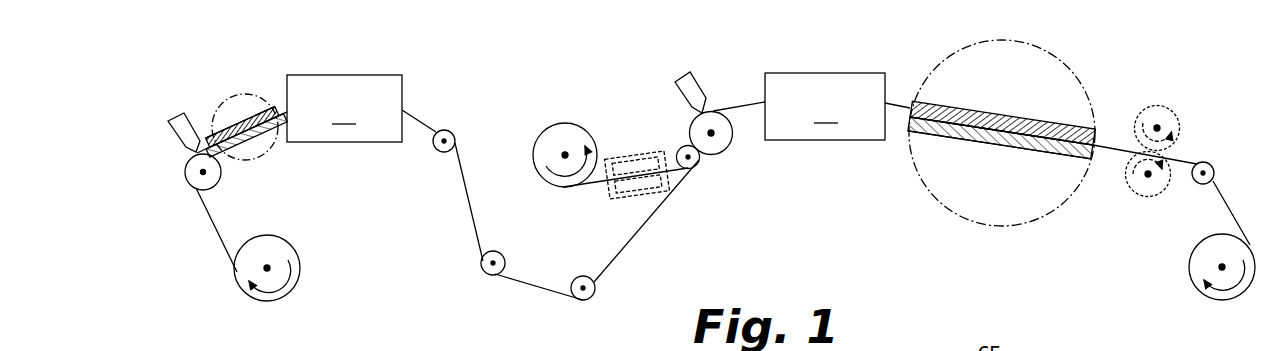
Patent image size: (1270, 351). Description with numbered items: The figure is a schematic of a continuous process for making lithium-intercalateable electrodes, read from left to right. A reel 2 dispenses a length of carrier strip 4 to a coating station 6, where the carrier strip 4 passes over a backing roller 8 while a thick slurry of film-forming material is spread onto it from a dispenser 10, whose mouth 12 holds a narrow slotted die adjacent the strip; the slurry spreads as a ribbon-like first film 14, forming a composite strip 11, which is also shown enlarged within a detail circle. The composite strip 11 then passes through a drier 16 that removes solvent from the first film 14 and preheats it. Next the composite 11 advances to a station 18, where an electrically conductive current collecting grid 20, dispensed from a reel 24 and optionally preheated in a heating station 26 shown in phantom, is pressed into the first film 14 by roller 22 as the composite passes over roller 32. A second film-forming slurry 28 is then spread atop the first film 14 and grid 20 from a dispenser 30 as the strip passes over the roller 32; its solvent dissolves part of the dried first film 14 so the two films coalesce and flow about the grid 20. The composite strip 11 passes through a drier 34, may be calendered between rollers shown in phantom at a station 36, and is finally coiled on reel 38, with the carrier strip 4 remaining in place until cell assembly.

The reel 2 is at (287, 238).
The carrier strip 4 is at (212, 233).
The coating station 6 is at (202, 123).
The backing roller 8 is at (222, 178).
The dispenser 10 is at (179, 116).
The composite strip 11 is at (258, 82).
The mouth 12 is at (188, 155).
The first film 14 is at (243, 114).
The drier 16 is at (344, 108).
The station 18 is at (704, 163).
The current collecting grid 20 is at (596, 182).
The roller 22 is at (684, 146).
The reel 24 is at (548, 128).
The heating station 26 is at (627, 152).
The film-forming slurry 28 is at (968, 113).
The dispenser 30 is at (697, 83).
The roller 32 is at (727, 152).
The drier 34 is at (825, 106).
The station 36 is at (1184, 128).
The reel 38 is at (1189, 262).